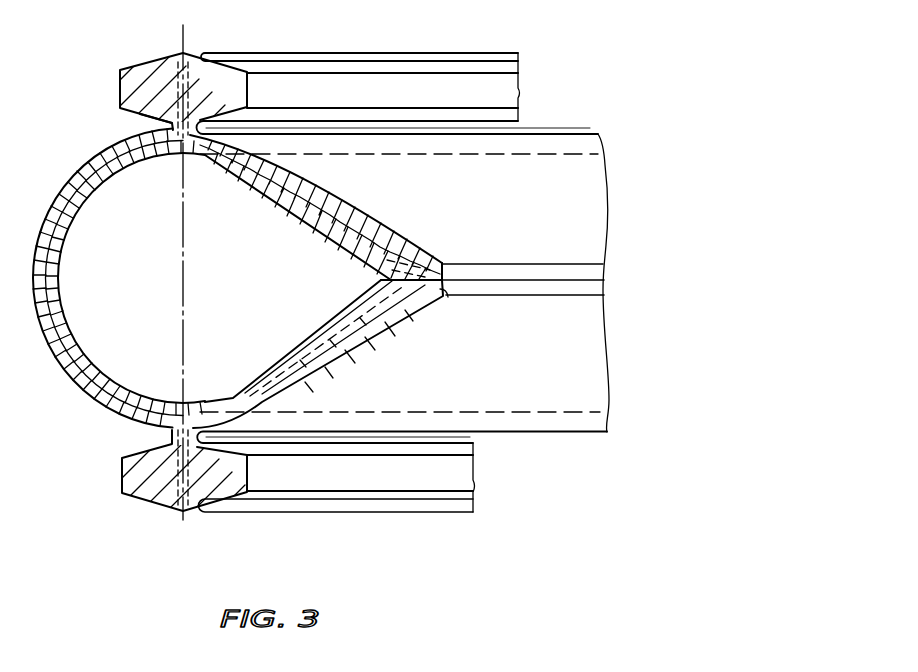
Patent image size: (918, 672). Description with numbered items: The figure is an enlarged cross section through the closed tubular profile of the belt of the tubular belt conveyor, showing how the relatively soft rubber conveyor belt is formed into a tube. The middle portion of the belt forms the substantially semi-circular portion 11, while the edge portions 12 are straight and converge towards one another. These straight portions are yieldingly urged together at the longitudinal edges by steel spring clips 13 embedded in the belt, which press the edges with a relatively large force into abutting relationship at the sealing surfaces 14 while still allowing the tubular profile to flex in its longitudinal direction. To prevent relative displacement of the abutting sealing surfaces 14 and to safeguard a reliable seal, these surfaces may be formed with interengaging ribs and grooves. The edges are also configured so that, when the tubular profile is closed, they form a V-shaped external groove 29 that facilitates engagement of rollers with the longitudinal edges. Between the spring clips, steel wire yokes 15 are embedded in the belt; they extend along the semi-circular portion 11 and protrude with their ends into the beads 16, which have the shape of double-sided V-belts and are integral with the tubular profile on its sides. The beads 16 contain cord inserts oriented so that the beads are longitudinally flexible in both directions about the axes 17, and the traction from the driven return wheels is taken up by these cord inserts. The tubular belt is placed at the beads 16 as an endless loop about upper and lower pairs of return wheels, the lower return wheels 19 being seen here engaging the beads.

The semi-circular portion 11 is at (73, 380).
The edge portions 12 is at (336, 199).
The steel spring clips 13 is at (387, 315).
The sealing surfaces 14 is at (438, 264).
The steel wire yokes 15 is at (152, 111).
The beads 16 is at (126, 93).
The axes 17 is at (183, 38).
The lower pair of return wheels 19 is at (498, 133).
The V-shaped external groove 29 is at (449, 297).